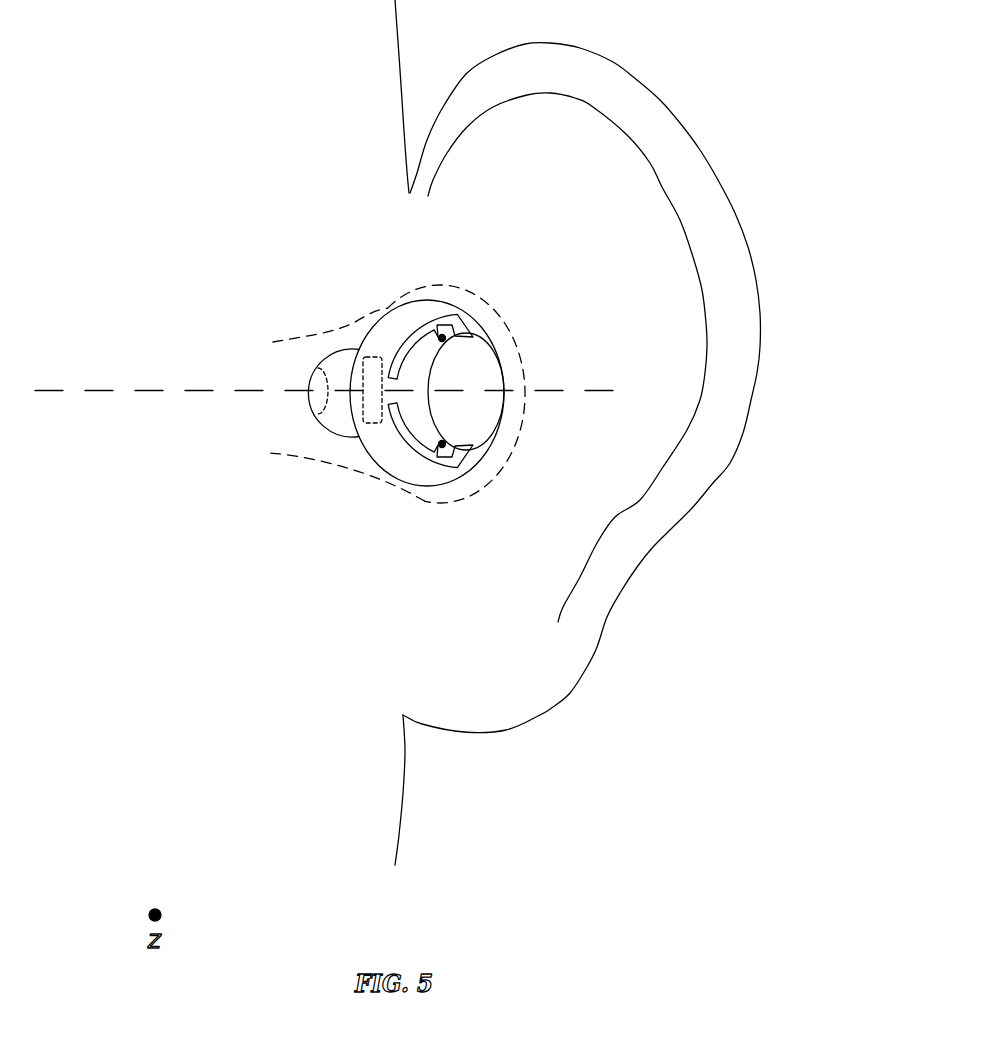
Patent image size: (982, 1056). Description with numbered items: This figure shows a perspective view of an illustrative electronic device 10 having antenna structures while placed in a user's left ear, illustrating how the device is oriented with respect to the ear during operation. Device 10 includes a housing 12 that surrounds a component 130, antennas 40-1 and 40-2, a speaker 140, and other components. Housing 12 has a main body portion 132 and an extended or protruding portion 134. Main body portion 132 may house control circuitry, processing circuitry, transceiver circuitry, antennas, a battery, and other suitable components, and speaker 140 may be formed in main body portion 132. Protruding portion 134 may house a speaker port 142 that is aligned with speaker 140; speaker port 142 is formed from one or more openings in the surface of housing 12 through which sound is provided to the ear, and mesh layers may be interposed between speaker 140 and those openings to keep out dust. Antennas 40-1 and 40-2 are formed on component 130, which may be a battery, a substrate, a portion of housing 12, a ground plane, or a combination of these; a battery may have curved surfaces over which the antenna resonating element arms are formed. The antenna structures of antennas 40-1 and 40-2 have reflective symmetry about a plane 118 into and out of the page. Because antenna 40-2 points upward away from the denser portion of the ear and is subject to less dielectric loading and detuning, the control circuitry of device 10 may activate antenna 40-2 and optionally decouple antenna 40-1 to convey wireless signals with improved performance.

The electronic device 10 is at (407, 325).
The housing 12 is at (385, 442).
The antenna 40-1 is at (404, 449).
The antenna 40-2 is at (392, 352).
The plane 118 is at (47, 390).
The component 130 is at (487, 406).
The main body portion 132 is at (373, 260).
The protruding portion 134 is at (372, 293).
The speaker 140 is at (362, 412).
The speaker port 142 is at (316, 401).